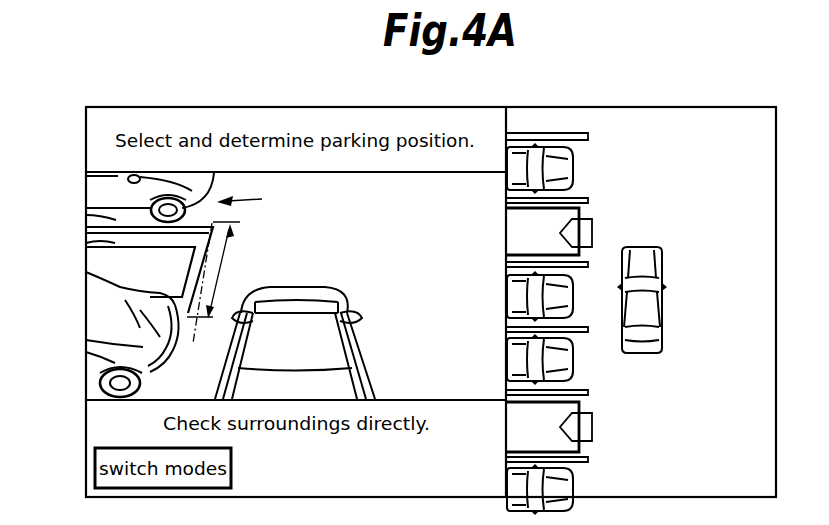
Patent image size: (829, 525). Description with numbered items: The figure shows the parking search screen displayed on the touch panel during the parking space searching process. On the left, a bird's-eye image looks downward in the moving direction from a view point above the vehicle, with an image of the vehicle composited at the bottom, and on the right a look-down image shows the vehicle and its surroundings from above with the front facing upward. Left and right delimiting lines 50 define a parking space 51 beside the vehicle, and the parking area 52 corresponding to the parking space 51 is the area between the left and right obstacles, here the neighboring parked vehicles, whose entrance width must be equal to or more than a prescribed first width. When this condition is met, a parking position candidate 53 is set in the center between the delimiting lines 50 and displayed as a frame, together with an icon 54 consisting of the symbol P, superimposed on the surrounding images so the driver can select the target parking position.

The delimiting lines 50 is at (120, 215).
The parking space 51 is at (193, 333).
The parking area 52 is at (259, 203).
The parking position candidate 53 is at (122, 245).
The icon 54 is at (592, 234).